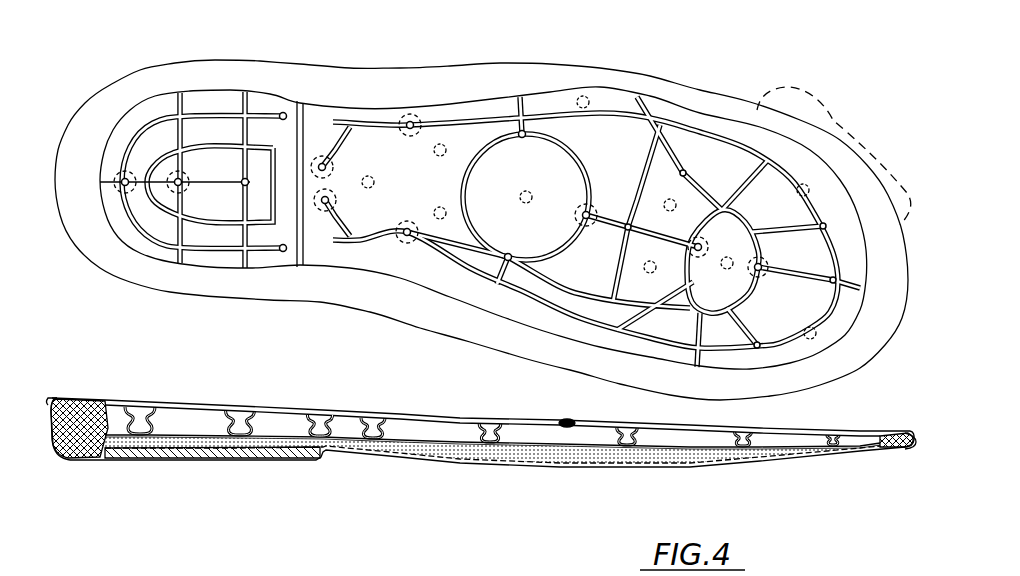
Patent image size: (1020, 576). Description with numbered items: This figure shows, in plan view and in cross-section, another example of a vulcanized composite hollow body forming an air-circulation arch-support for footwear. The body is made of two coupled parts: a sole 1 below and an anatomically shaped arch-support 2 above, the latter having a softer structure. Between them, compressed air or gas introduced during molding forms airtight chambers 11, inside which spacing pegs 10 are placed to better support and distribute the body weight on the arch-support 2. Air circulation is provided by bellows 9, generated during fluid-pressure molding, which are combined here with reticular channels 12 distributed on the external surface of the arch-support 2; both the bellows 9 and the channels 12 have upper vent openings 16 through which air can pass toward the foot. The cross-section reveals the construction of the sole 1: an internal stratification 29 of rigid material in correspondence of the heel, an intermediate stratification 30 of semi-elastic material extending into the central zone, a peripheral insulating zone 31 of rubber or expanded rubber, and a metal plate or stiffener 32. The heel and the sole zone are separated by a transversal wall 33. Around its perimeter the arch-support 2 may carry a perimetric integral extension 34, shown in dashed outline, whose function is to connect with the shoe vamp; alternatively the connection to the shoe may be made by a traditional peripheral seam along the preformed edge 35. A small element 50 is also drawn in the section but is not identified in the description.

The sole 1 is at (293, 460).
The arch-support 2 is at (435, 419).
The bellows 9 is at (180, 180).
The spacing pegs 10 is at (671, 205).
The airtight chambers 11 is at (543, 432).
The reticular channels 12 is at (208, 112).
The upper vent openings 16 is at (177, 180).
The internal stratification 29 is at (212, 452).
The intermediate stratification 30 is at (180, 437).
The peripheral insulating zone 31 is at (153, 272).
The metal plate or stiffener 32 is at (427, 443).
The transversal wall 33 is at (307, 418).
The perimetric integral extension 34 is at (830, 117).
The preformed edge 35 is at (48, 400).
The plug 50 is at (567, 430).